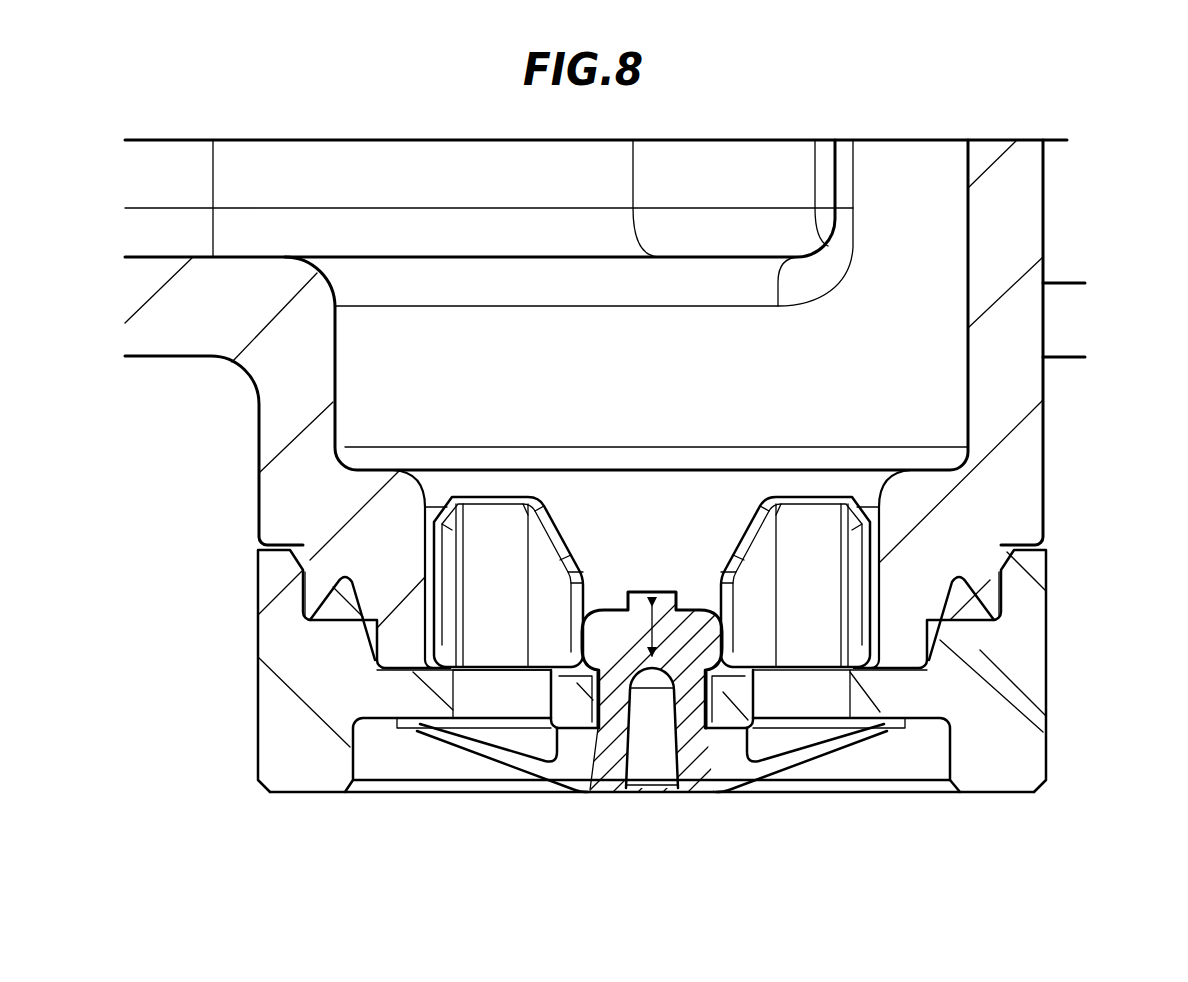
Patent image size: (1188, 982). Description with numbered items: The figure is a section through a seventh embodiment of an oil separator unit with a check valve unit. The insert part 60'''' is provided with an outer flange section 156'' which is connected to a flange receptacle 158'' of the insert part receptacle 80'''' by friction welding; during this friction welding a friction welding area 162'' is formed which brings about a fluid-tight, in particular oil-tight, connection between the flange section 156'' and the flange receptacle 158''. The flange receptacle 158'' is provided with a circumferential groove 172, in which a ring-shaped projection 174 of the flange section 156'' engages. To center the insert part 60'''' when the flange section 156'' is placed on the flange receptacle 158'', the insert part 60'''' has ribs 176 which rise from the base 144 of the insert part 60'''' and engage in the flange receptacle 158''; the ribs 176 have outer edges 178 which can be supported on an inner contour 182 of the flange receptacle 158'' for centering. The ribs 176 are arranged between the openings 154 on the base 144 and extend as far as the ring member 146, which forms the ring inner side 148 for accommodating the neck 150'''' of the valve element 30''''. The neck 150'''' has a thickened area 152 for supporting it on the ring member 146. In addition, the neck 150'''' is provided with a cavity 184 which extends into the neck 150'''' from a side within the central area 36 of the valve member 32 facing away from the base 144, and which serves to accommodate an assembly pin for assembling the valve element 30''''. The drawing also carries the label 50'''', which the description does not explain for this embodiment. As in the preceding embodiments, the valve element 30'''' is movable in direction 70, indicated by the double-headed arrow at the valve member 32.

The insert part receptacle 80'''' is at (584, 384).
The inner contour 182 is at (437, 510).
The outer edges 178 is at (880, 540).
The ribs 176 is at (488, 527).
The insert part 60'''' is at (708, 671).
The flange section 156'' is at (1068, 647).
The ring-shaped projection 174 is at (272, 565).
The circumferential groove 172 is at (300, 578).
The flange receptacle 158'' is at (1062, 580).
The friction welding area 162'' is at (1045, 618).
The valve member 32 is at (870, 728).
The valve element 30'''' is at (652, 795).
The left seal block 50'''' is at (539, 666).
The neck 150'''' is at (761, 666).
The base 144 is at (515, 688).
The openings 154 is at (450, 672).
The central area 36 is at (702, 686).
The cavity 184 is at (668, 733).
The direction 70 is at (643, 592).
The ring member 146 is at (610, 640).
The thickened area 152 is at (692, 623).
The ring inner side 148 is at (612, 702).